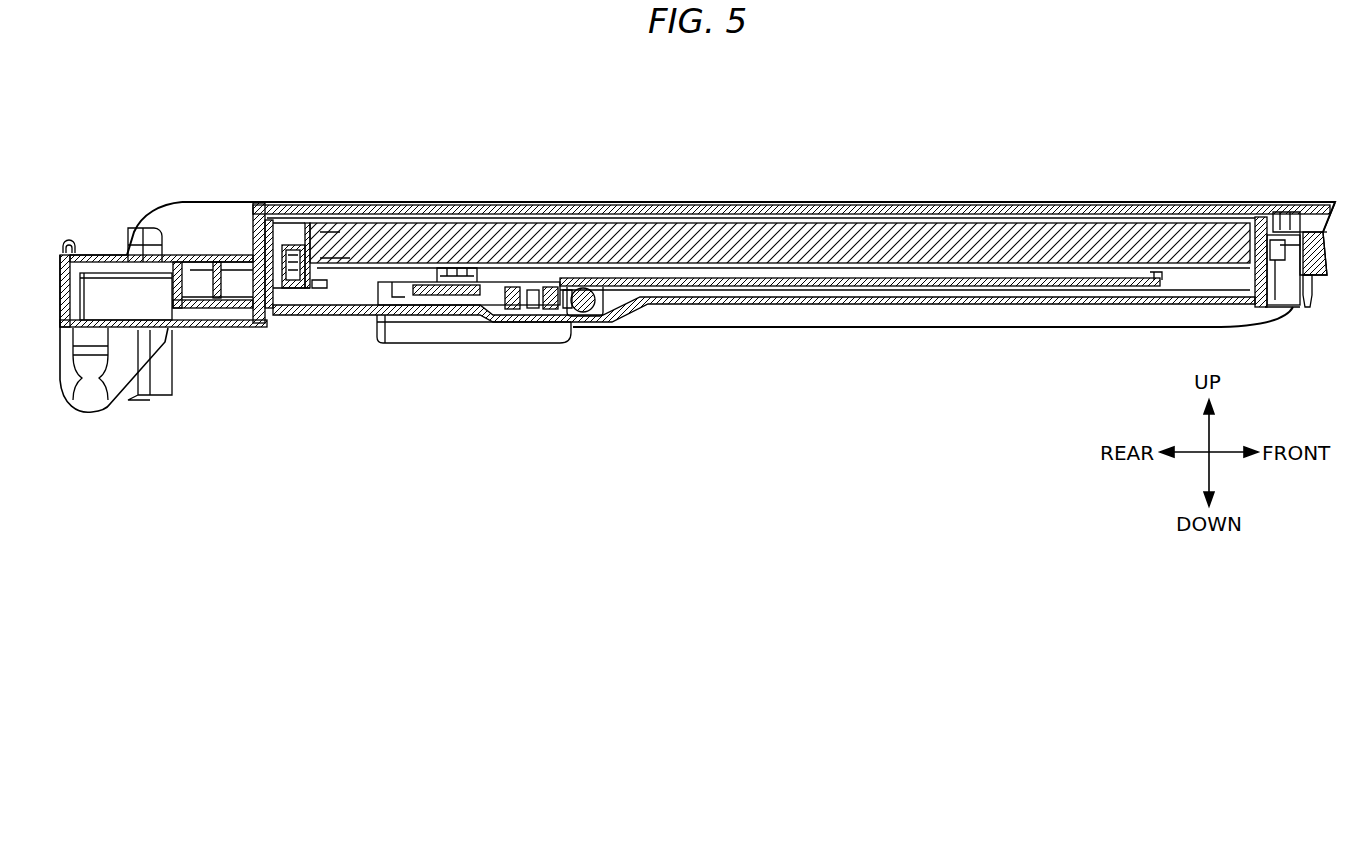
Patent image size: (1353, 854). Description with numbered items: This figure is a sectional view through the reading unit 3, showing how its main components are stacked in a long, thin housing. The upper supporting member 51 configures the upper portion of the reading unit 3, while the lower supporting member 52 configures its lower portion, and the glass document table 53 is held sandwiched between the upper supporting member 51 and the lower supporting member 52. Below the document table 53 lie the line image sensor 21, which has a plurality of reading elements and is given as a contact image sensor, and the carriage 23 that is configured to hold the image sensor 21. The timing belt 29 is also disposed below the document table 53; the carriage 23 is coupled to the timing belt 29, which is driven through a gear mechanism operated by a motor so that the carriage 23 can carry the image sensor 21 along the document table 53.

The reading unit 3 is at (697, 307).
The line image sensor 21 is at (800, 232).
The carriage 23 is at (725, 290).
The timing belt 29 is at (510, 297).
The upper supporting member 51 is at (280, 200).
The lower supporting member 52 is at (272, 323).
The document table 53 is at (302, 205).